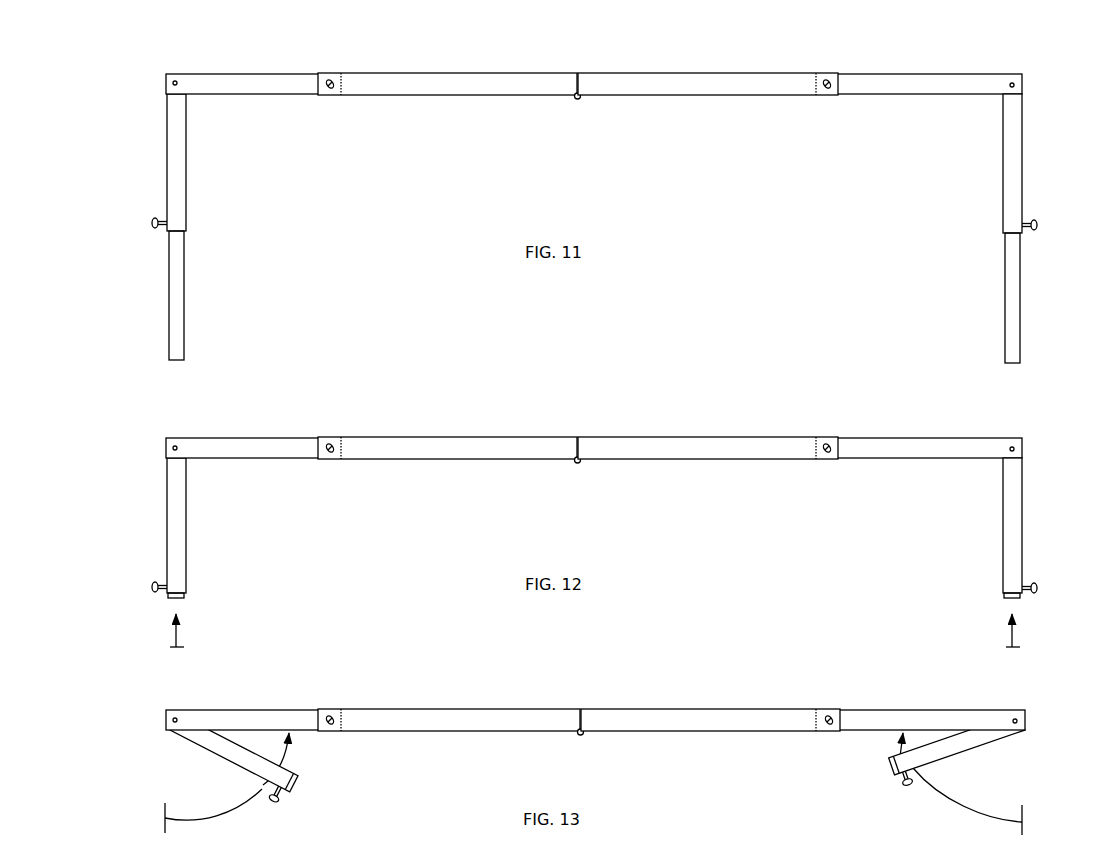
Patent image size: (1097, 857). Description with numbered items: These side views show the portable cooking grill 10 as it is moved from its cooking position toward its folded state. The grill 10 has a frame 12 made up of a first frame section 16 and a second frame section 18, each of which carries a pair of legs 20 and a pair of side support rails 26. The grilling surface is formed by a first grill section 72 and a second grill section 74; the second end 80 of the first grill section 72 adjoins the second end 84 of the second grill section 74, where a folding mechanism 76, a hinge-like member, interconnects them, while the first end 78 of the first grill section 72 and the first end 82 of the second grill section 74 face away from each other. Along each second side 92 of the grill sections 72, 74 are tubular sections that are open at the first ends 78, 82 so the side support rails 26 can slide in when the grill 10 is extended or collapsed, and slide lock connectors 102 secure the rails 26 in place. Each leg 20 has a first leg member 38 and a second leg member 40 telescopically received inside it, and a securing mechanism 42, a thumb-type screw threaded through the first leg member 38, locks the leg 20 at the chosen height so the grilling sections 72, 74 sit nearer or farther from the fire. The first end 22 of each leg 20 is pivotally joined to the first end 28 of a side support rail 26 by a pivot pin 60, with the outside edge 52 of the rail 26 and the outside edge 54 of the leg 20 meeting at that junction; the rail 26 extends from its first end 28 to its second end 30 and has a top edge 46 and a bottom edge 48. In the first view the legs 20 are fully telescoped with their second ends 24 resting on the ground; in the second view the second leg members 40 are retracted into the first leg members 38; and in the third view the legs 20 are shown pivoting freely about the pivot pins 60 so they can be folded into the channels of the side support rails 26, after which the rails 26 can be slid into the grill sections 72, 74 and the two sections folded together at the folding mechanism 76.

In FIG. 11, the portable cooking grill 10 is at (548, 192).
In FIG. 12, the portable cooking grill 10 is at (565, 491).
In FIG. 13, the portable cooking grill 10 is at (584, 736).
In FIG. 11, the frame 12 is at (154, 146).
In FIG. 12, the frame 12 is at (153, 509).
In FIG. 11, the first frame section 16 is at (200, 107).
In FIG. 12, the first frame section 16 is at (207, 486).
In FIG. 11, the second frame section 18 is at (982, 137).
In FIG. 12, the second frame section 18 is at (980, 511).
In FIG. 11, the legs 20 is at (1000, 213).
In FIG. 12, the legs 20 is at (1023, 556).
In FIG. 13, the legs 20 is at (1003, 745).
In FIG. 11, the first end of leg 22 is at (160, 103).
In FIG. 12, the first end of leg 22 is at (160, 472).
In FIG. 11, the second end of leg 24 is at (160, 355).
In FIG. 11, the side support rails 26 is at (258, 84).
In FIG. 12, the side support rails 26 is at (280, 449).
In FIG. 13, the side support rails 26 is at (256, 721).
In FIG. 11, the first end of side support rail 28 is at (183, 72).
In FIG. 12, the first end of side support rail 28 is at (183, 436).
In FIG. 13, the first end of side support rail 28 is at (189, 705).
In FIG. 11, the second end of side support rail 30 is at (330, 99).
In FIG. 11, the first leg member 38 is at (180, 181).
In FIG. 12, the first leg member 38 is at (178, 540).
In FIG. 13, the first leg member 38 is at (218, 748).
In FIG. 11, the second leg member 40 is at (180, 296).
In FIG. 11, the securing mechanism 42 is at (150, 223).
In FIG. 12, the securing mechanism 42 is at (150, 587).
In FIG. 13, the securing mechanism 42 is at (249, 807).
In FIG. 11, the top edge of side support rail 46 is at (866, 72).
In FIG. 12, the top edge of side support rail 46 is at (888, 436).
In FIG. 11, the bottom edge of side support rail 48 is at (888, 99).
In FIG. 12, the bottom edge of side support rail 48 is at (918, 459).
In FIG. 11, the outside edge of side support rail 52 is at (934, 89).
In FIG. 12, the outside edge of side support rail 52 is at (950, 452).
In FIG. 13, the outside edge of side support rail 52 is at (962, 720).
In FIG. 11, the outside edge of leg 54 is at (1013, 143).
In FIG. 12, the outside edge of leg 54 is at (1013, 484).
In FIG. 13, the outside edge of leg 54 is at (955, 745).
In FIG. 11, the pivot pin 60 is at (172, 81).
In FIG. 12, the pivot pin 60 is at (173, 447).
In FIG. 13, the pivot pin 60 is at (172, 719).
In FIG. 11, the first grill section 72 is at (447, 72).
In FIG. 12, the first grill section 72 is at (408, 436).
In FIG. 13, the first grill section 72 is at (441, 706).
In FIG. 11, the second grill section 74 is at (744, 72).
In FIG. 12, the second grill section 74 is at (720, 436).
In FIG. 13, the second grill section 74 is at (763, 706).
In FIG. 11, the folding mechanism 76 is at (575, 103).
In FIG. 12, the folding mechanism 76 is at (576, 466).
In FIG. 13, the folding mechanism 76 is at (578, 739).
In FIG. 11, the first end of first grill section 78 is at (330, 69).
In FIG. 12, the first end of first grill section 78 is at (330, 433).
In FIG. 13, the first end of first grill section 78 is at (330, 705).
In FIG. 11, the second end of first grill section 80 is at (563, 72).
In FIG. 12, the second end of first grill section 80 is at (563, 436).
In FIG. 13, the second end of first grill section 80 is at (563, 706).
In FIG. 11, the first end of second grill section 82 is at (828, 72).
In FIG. 12, the first end of second grill section 82 is at (828, 436).
In FIG. 13, the first end of second grill section 82 is at (830, 706).
In FIG. 11, the second end of second grill section 84 is at (598, 72).
In FIG. 12, the second end of second grill section 84 is at (598, 436).
In FIG. 13, the second end of second grill section 84 is at (606, 706).
In FIG. 11, the second side of grill section 92 is at (459, 86).
In FIG. 12, the second side of grill section 92 is at (489, 460).
In FIG. 13, the second side of grill section 92 is at (466, 720).
In FIG. 11, the slide lock connectors 102 is at (823, 92).
In FIG. 12, the slide lock connectors 102 is at (823, 456).
In FIG. 13, the slide lock connectors 102 is at (831, 728).